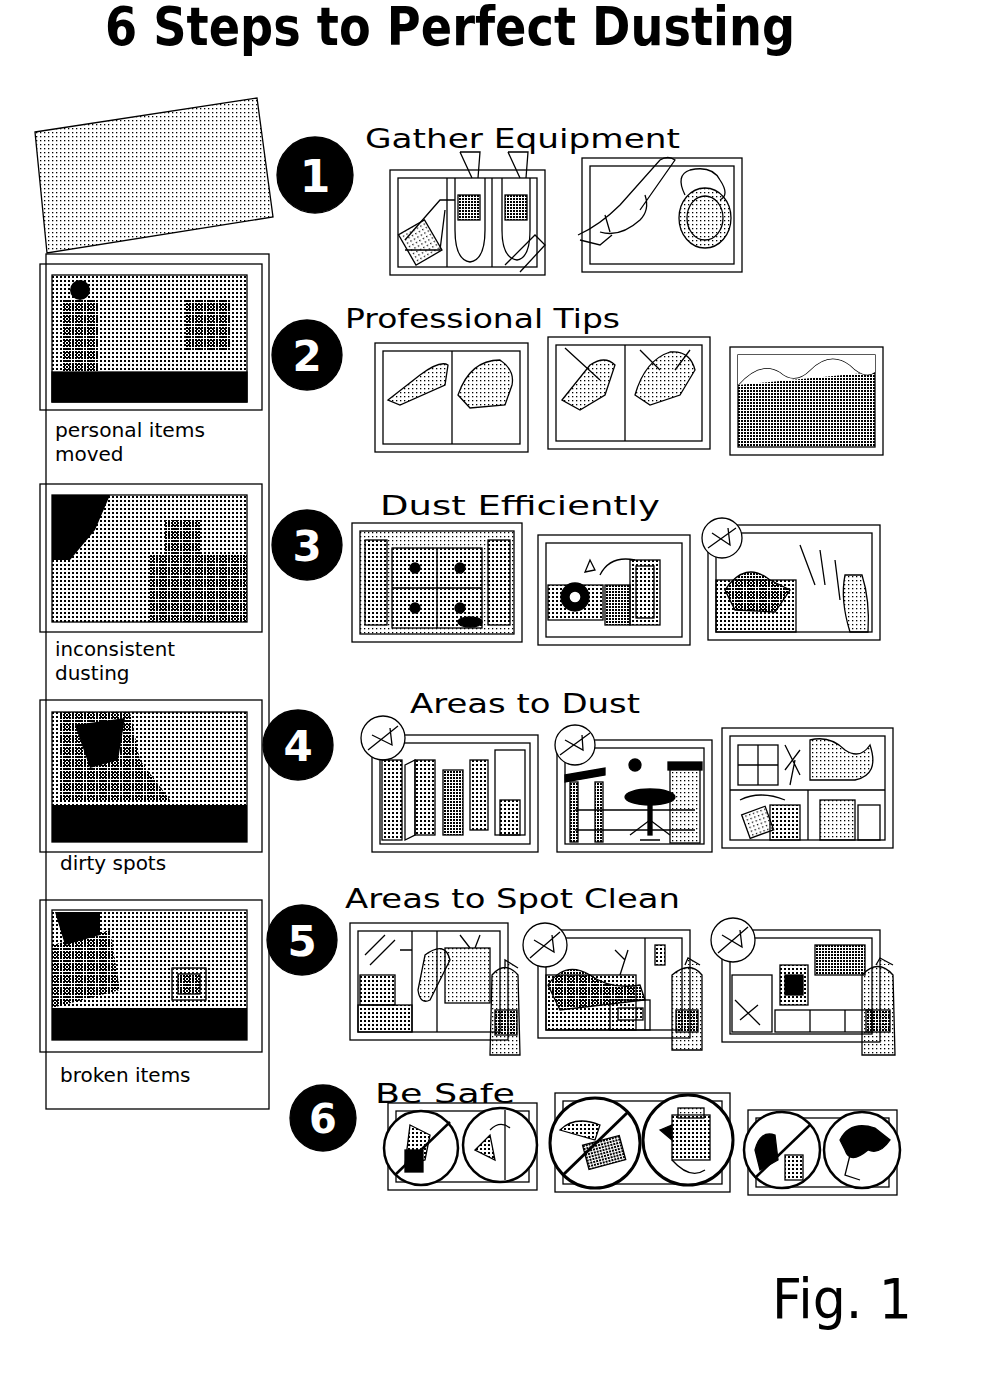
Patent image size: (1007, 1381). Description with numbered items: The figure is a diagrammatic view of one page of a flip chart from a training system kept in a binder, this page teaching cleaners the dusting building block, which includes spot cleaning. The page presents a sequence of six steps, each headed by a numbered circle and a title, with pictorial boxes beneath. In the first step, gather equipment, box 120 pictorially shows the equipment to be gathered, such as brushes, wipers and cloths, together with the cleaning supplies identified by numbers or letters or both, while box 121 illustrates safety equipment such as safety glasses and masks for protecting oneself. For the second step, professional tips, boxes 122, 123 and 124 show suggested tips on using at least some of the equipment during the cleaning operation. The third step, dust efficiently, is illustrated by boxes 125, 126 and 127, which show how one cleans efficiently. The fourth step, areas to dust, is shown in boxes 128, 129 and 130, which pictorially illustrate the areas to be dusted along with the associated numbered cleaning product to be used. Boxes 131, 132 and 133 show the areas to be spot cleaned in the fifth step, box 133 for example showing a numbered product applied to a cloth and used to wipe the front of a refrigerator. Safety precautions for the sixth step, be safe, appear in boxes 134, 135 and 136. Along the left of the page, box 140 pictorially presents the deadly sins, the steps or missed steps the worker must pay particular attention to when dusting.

The Deadly Sins box 140 is at (72, 128).
The gather equipment box 120 is at (390, 243).
The safety equipment box 121 is at (746, 243).
The professional tip box 122 is at (462, 452).
The professional tip box 123 is at (650, 449).
The professional tip box 124 is at (815, 455).
The dust efficiently box 125 is at (455, 642).
The dust efficiently box 126 is at (628, 645).
The dust efficiently box 127 is at (765, 640).
The areas to dust box 128 is at (475, 852).
The areas to dust box 129 is at (645, 852).
The areas to dust box 130 is at (828, 848).
The areas to spot clean box 131 is at (425, 1040).
The areas to spot clean box 132 is at (608, 1038).
The areas to spot clean box 133 is at (792, 1042).
The safety precaution box 134 is at (473, 1190).
The safety precaution box 135 is at (668, 1192).
The safety precaution box 136 is at (830, 1195).